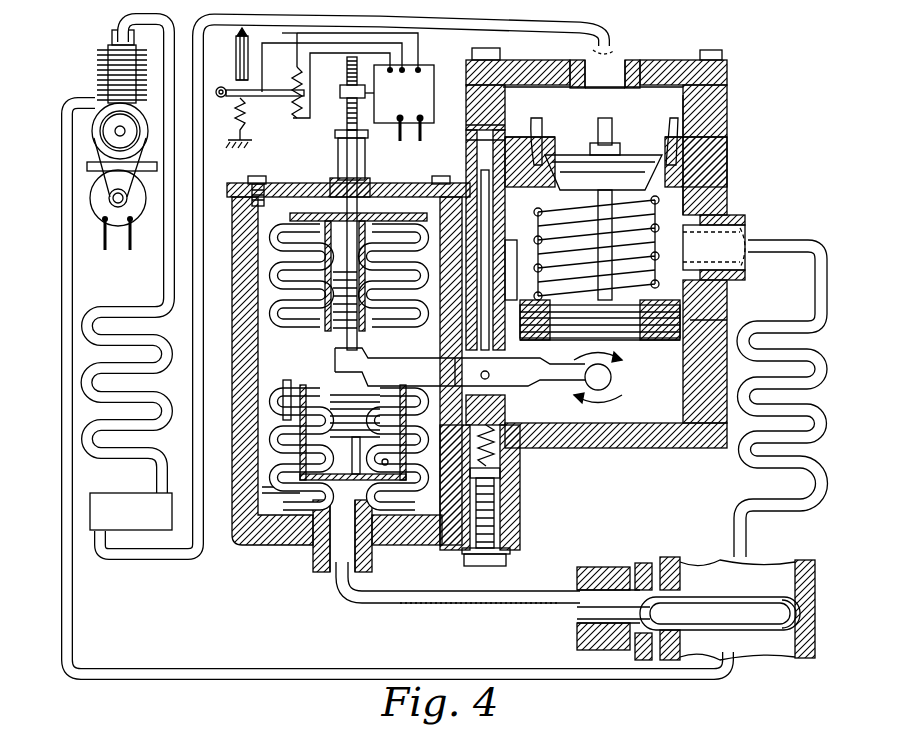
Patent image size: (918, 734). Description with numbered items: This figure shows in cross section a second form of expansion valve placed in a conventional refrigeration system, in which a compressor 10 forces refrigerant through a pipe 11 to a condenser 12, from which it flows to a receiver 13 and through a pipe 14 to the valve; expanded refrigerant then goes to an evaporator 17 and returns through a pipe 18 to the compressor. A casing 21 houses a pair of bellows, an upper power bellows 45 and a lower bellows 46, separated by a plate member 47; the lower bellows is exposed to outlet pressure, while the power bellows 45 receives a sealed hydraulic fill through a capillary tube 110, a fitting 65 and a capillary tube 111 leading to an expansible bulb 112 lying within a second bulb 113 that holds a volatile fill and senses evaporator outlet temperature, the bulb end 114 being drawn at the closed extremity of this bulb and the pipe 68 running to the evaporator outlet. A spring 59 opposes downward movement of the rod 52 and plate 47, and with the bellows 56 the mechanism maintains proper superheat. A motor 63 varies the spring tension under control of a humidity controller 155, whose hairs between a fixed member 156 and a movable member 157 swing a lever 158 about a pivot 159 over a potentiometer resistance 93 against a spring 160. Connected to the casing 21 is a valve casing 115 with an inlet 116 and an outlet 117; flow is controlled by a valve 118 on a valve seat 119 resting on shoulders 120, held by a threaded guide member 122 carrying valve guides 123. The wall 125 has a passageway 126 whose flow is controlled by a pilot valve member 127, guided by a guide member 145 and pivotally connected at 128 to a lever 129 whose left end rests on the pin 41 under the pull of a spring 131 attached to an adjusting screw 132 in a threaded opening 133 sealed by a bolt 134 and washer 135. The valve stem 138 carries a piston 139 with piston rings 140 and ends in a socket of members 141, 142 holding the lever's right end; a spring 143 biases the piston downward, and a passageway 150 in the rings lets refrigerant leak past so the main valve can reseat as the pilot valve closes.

The compressor 10 is at (99, 44).
The pipe 11 is at (160, 250).
The condenser 12 is at (172, 348).
The receiver 13 is at (122, 525).
The pipe 14 is at (196, 420).
The evaporator 17 is at (800, 416).
The pipe 18 is at (216, 664).
The casing 21 is at (237, 555).
The pin 41 is at (388, 368).
The bellows 45 is at (424, 292).
The bellows 46 is at (426, 448).
The plate member 47 is at (290, 368).
The rod 52 is at (392, 463).
The bellows 56 is at (398, 413).
The spring 59 is at (372, 192).
The motor 63 is at (411, 102).
The fitting 65 is at (314, 560).
The pipe 68 is at (468, 606).
The potentiometer resistance 93 is at (296, 120).
The capillary tube 110 is at (258, 482).
The capillary tube 111 is at (374, 606).
The expansible bulb 112 is at (704, 598).
The bulb 113 is at (755, 596).
The bulb end 114 is at (774, 628).
The valve casing 115 is at (597, 452).
The inlet 116 is at (620, 58).
The outlet 117 is at (728, 232).
The valve 118 is at (622, 158).
The valve seat 119 is at (706, 156).
The shoulders 120 is at (706, 182).
The threaded guide member 122 is at (712, 137).
The valve guides 123 is at (678, 120).
The wall 125 is at (468, 144).
The passageway 126 is at (466, 128).
The valve member 127 is at (506, 250).
The pivotal connection 128 is at (488, 382).
The lever 129 is at (546, 392).
The spring 131 is at (500, 452).
The adjusting screw 132 is at (502, 500).
The threaded opening 133 is at (502, 522).
The bolt 134 is at (492, 568).
The washer 135 is at (512, 551).
The valve stem 138 is at (614, 250).
The piston 139 is at (662, 342).
The piston rings 140 is at (688, 335).
The socket member 141 is at (615, 369).
The socket member 142 is at (612, 406).
The spring 143 is at (614, 222).
The guide member 145 is at (492, 292).
The passageway 150 is at (690, 322).
The humidity controller 155 is at (236, 51).
The fixed member 156 is at (282, 33).
The movable member 157 is at (238, 80).
The lever 158 is at (280, 97).
The pivot 159 is at (221, 98).
The spring 160 is at (250, 130).